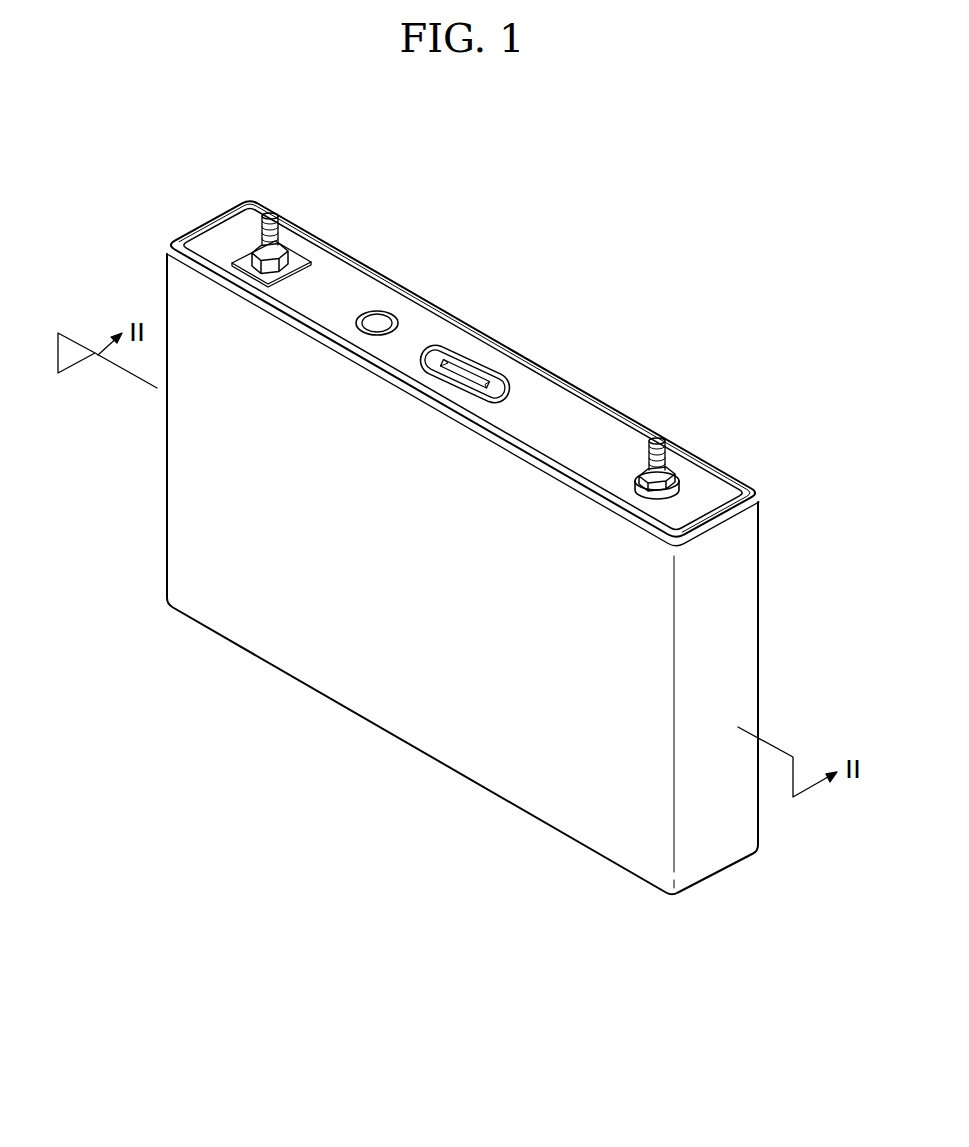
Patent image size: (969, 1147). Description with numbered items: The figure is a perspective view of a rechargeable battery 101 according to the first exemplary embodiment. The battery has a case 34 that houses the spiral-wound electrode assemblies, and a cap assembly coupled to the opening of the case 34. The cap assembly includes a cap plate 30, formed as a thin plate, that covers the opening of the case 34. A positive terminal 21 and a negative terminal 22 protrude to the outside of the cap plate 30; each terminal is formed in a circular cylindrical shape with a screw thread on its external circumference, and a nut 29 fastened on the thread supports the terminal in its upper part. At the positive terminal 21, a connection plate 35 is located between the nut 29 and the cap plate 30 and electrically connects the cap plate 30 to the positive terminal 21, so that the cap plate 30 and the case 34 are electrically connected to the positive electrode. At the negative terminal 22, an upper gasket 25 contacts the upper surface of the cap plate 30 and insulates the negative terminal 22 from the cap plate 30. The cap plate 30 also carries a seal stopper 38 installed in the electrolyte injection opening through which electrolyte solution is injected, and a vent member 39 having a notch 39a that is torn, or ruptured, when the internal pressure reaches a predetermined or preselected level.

The rechargeable battery 101 is at (603, 311).
The case 34 is at (393, 712).
The cap plate 30 is at (330, 272).
The connection plate 35 is at (246, 258).
The positive terminal 21 is at (270, 213).
The negative terminal 22 is at (657, 438).
The nut 29 is at (668, 470).
The upper gasket 25 is at (678, 487).
The seal stopper 38 is at (378, 321).
The vent member 39 is at (455, 368).
The notch 39a is at (468, 380).